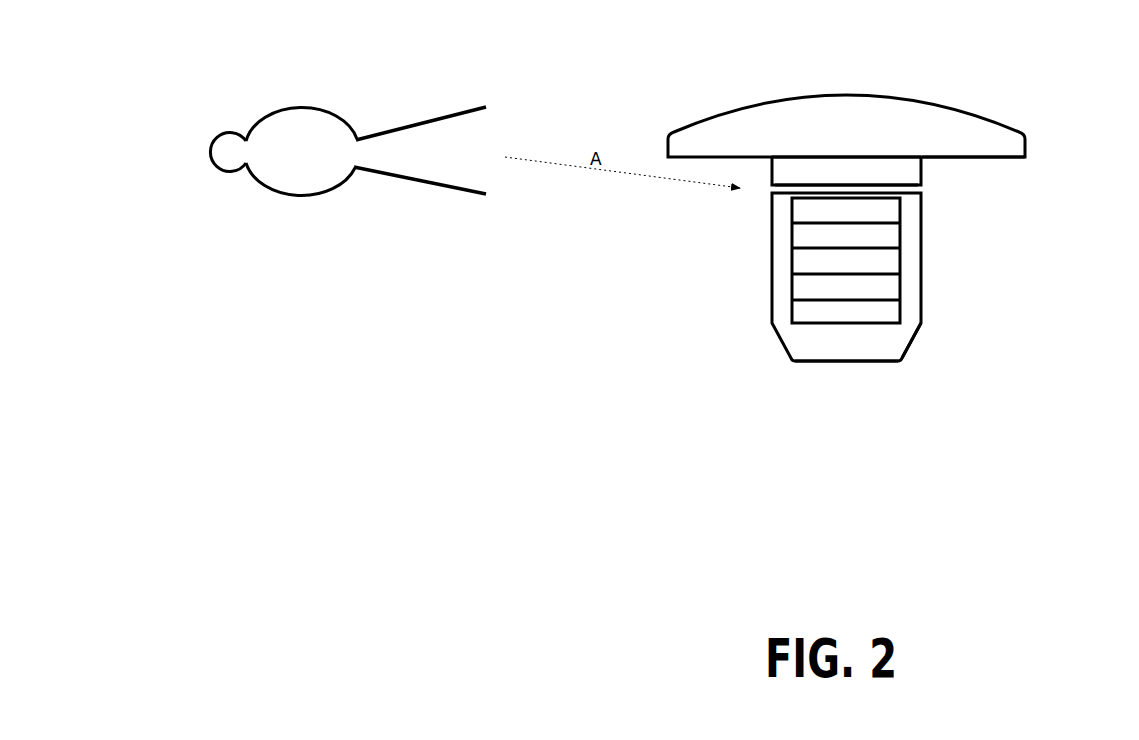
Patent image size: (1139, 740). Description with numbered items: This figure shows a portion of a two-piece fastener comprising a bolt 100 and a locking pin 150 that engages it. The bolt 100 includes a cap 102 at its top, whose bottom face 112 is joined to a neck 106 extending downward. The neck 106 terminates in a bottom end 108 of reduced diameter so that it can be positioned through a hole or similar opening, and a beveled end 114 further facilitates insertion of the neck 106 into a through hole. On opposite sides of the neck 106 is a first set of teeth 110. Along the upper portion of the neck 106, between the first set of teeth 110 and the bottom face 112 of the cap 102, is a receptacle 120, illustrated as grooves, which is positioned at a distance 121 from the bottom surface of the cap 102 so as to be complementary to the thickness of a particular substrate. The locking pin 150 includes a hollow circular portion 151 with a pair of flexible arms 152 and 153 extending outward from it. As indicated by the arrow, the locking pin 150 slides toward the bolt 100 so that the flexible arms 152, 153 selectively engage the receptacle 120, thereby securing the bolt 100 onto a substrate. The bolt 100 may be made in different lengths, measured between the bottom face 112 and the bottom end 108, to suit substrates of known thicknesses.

The bolt 100 is at (965, 82).
The cap 102 is at (996, 133).
The neck 106 is at (907, 280).
The bottom end 108 is at (826, 365).
The first set of teeth 110 is at (825, 259).
The bottom face 112 is at (984, 158).
The beveled end 114 is at (910, 345).
The receptacle 120 is at (770, 195).
The distance 121 is at (830, 182).
The locking pin 150 is at (263, 102).
The hollow circular portion 151 is at (297, 193).
The flexible arm 152 is at (445, 115).
The flexible arm 153 is at (443, 190).